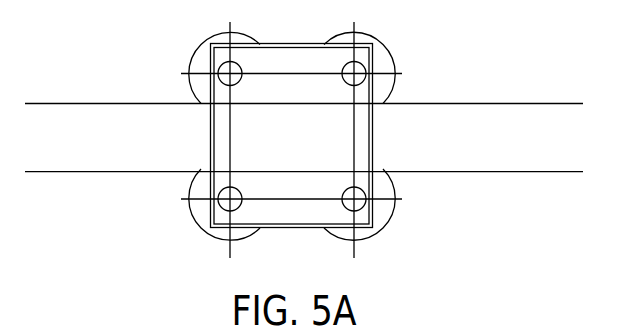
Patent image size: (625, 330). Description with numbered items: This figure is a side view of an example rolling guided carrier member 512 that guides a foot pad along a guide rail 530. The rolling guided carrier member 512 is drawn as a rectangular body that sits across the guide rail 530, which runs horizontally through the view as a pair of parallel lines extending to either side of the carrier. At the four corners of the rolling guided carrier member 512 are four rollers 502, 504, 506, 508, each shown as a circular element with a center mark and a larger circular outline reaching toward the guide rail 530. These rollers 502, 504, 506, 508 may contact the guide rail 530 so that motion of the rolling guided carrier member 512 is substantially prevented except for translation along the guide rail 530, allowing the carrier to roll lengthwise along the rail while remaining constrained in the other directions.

The roller 502 is at (199, 62).
The roller 504 is at (382, 67).
The roller 506 is at (200, 213).
The roller 508 is at (383, 215).
The rolling guided carrier member 512 is at (277, 149).
The guide rail 530 is at (482, 113).